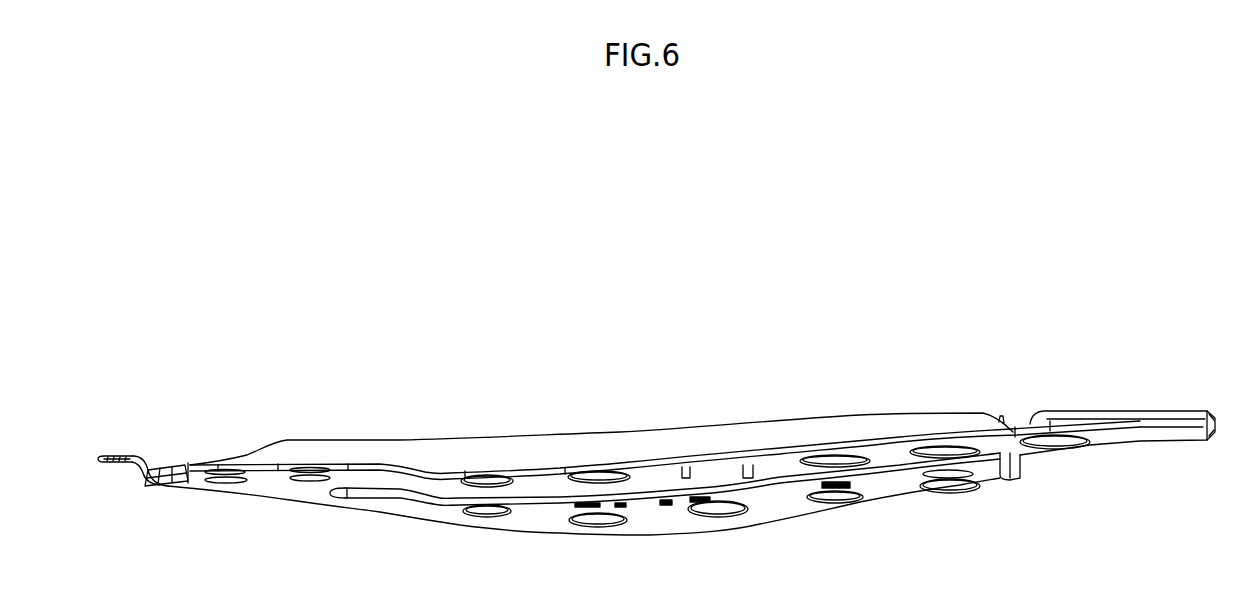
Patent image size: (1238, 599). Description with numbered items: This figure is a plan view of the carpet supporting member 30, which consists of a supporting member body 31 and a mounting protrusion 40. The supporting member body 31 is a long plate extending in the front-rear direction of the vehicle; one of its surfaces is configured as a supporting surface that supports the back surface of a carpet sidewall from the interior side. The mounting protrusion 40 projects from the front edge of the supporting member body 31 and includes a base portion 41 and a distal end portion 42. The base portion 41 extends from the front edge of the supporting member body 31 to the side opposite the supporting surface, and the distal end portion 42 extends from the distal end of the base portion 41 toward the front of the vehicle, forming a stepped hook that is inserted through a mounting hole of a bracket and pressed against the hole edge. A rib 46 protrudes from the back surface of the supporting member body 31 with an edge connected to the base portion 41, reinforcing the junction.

The carpet supporting member 30 is at (232, 337).
The mounting protrusion 40 is at (95, 378).
The supporting member body 31 is at (260, 482).
The distal end portion 42 is at (112, 456).
The base portion 41 is at (151, 466).
The rib 46 is at (155, 477).